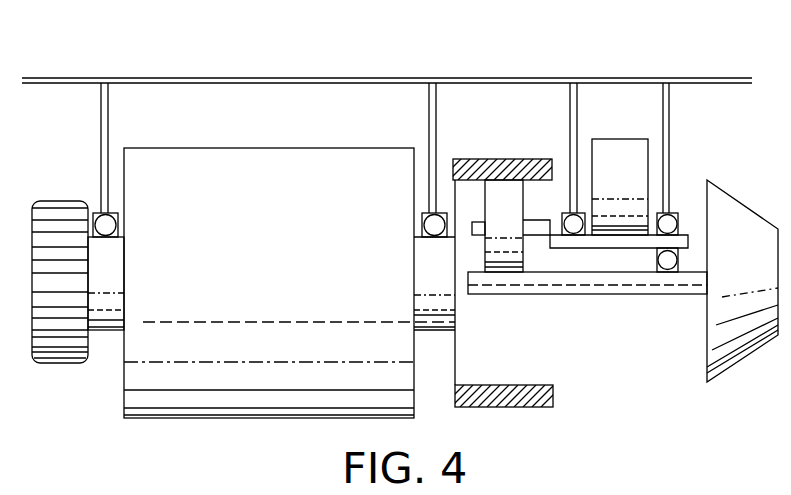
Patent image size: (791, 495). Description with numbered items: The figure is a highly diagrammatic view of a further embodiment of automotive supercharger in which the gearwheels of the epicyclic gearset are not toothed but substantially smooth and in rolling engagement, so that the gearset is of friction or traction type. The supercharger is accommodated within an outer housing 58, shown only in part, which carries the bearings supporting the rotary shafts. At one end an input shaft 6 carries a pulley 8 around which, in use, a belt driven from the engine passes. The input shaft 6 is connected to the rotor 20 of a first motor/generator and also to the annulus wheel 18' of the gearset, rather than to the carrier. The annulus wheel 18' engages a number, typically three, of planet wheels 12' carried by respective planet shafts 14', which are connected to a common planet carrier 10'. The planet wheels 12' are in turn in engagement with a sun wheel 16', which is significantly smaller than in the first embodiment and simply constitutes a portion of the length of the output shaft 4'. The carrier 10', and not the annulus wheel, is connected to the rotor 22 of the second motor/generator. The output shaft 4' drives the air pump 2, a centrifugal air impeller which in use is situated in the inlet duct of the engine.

The outer housing 58 is at (341, 77).
The pulley 8 is at (56, 365).
The input shaft 6 is at (105, 331).
The rotor of first motor/generator 20 is at (202, 420).
The annulus wheel 18' is at (501, 255).
The planet wheels 12' is at (497, 199).
The planet shafts 14' is at (538, 282).
The planet carrier 10' is at (619, 290).
The sun wheel 16' is at (587, 311).
The output shaft 4' is at (668, 281).
The rotor of second motor/generator 22 is at (620, 138).
The air pump 2 is at (738, 362).